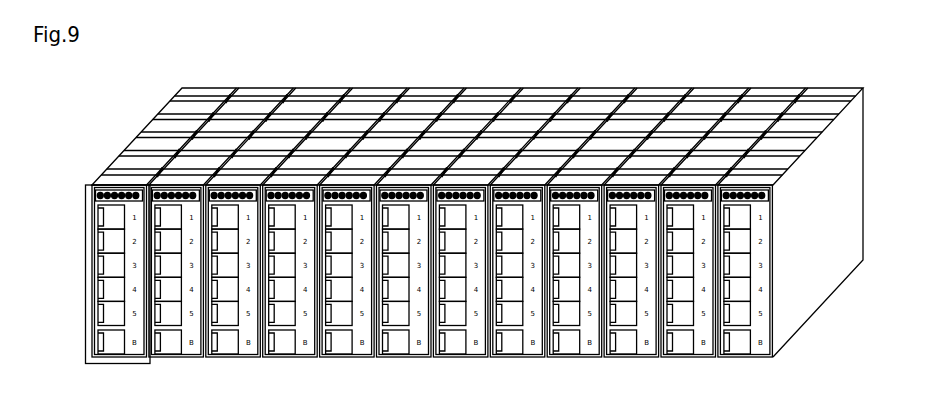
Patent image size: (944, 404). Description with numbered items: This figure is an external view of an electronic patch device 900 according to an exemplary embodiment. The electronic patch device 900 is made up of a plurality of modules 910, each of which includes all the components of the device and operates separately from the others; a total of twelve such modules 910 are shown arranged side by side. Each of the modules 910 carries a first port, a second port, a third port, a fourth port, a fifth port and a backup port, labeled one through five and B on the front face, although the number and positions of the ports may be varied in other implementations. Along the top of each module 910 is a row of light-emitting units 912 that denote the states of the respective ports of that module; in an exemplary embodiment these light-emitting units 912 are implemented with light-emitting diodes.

The rack housing / enclosure 900 is at (864, 233).
The module 910 is at (85, 187).
The light-emitting unit 912 is at (93, 196).